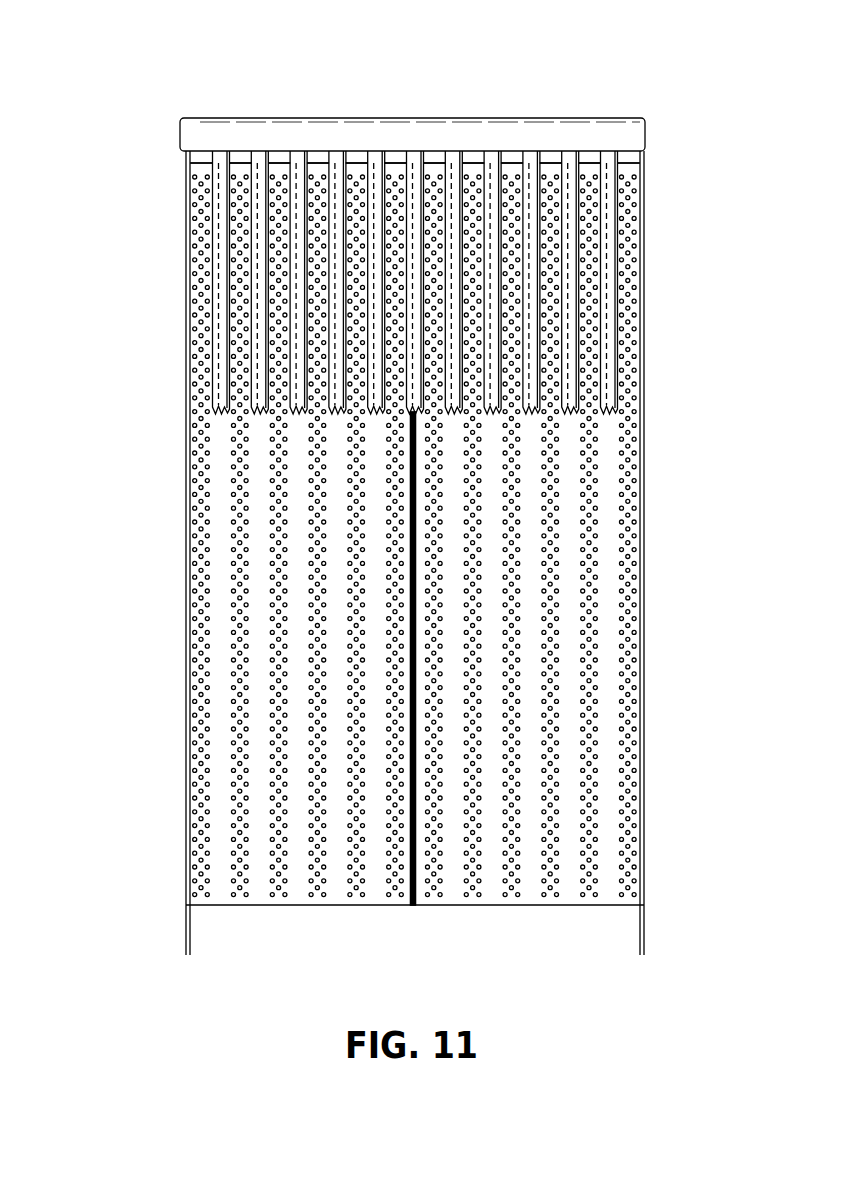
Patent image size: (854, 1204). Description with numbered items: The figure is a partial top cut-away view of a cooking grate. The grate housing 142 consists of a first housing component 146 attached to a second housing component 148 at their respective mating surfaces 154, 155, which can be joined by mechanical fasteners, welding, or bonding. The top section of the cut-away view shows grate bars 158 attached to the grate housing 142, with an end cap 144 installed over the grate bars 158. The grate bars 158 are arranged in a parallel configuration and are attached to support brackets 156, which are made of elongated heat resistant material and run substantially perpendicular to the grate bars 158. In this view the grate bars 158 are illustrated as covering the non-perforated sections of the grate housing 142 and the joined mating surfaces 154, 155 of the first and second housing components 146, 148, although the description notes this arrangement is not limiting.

The grate housing 142 is at (198, 359).
The end cap 144 is at (537, 139).
The first housing component 146 is at (612, 598).
The second housing component 148 is at (220, 774).
The mating surface 154 is at (413, 737).
The mating surface 155 is at (413, 658).
The support bracket 156 is at (626, 158).
The grate bar 158 is at (609, 332).